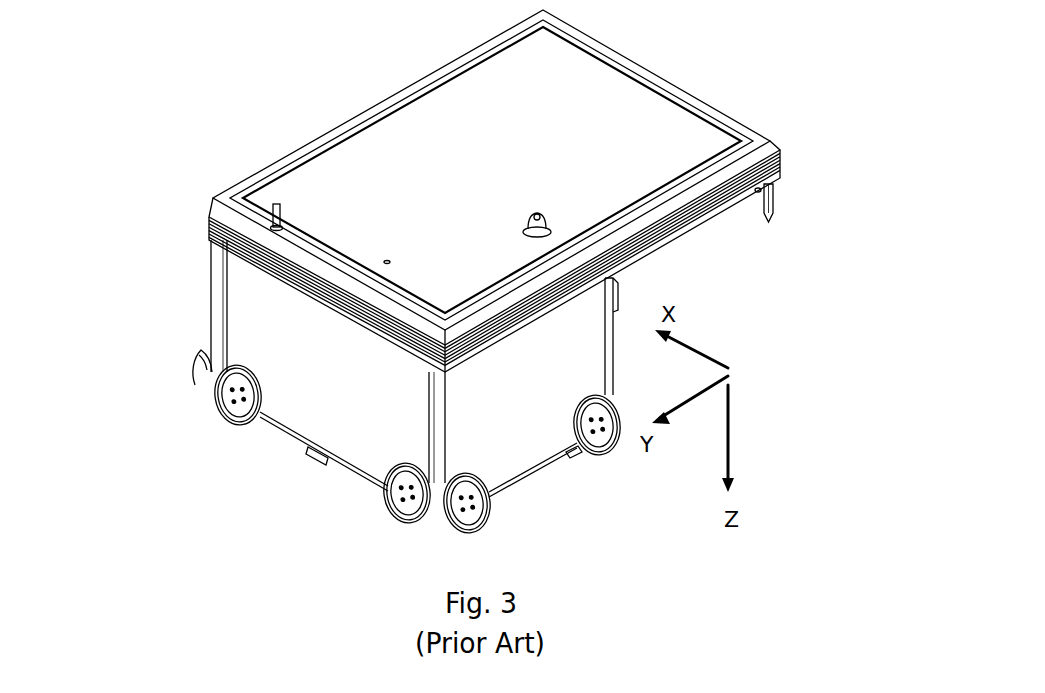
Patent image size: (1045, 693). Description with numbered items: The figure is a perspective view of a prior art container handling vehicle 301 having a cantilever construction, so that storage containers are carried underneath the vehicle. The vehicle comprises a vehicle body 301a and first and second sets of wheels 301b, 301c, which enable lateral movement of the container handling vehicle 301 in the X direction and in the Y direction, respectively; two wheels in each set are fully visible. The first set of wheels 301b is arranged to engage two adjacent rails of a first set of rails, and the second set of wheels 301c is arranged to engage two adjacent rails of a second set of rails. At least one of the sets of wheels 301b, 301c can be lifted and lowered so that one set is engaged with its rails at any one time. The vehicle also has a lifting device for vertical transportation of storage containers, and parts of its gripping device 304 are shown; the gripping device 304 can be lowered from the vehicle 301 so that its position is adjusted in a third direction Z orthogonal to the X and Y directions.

The container handling vehicle 301 is at (487, 295).
The vehicle body 301a is at (212, 214).
The first set of wheels 301b is at (437, 410).
The second set of wheels 301c is at (262, 468).
The gripping device 304 is at (788, 220).